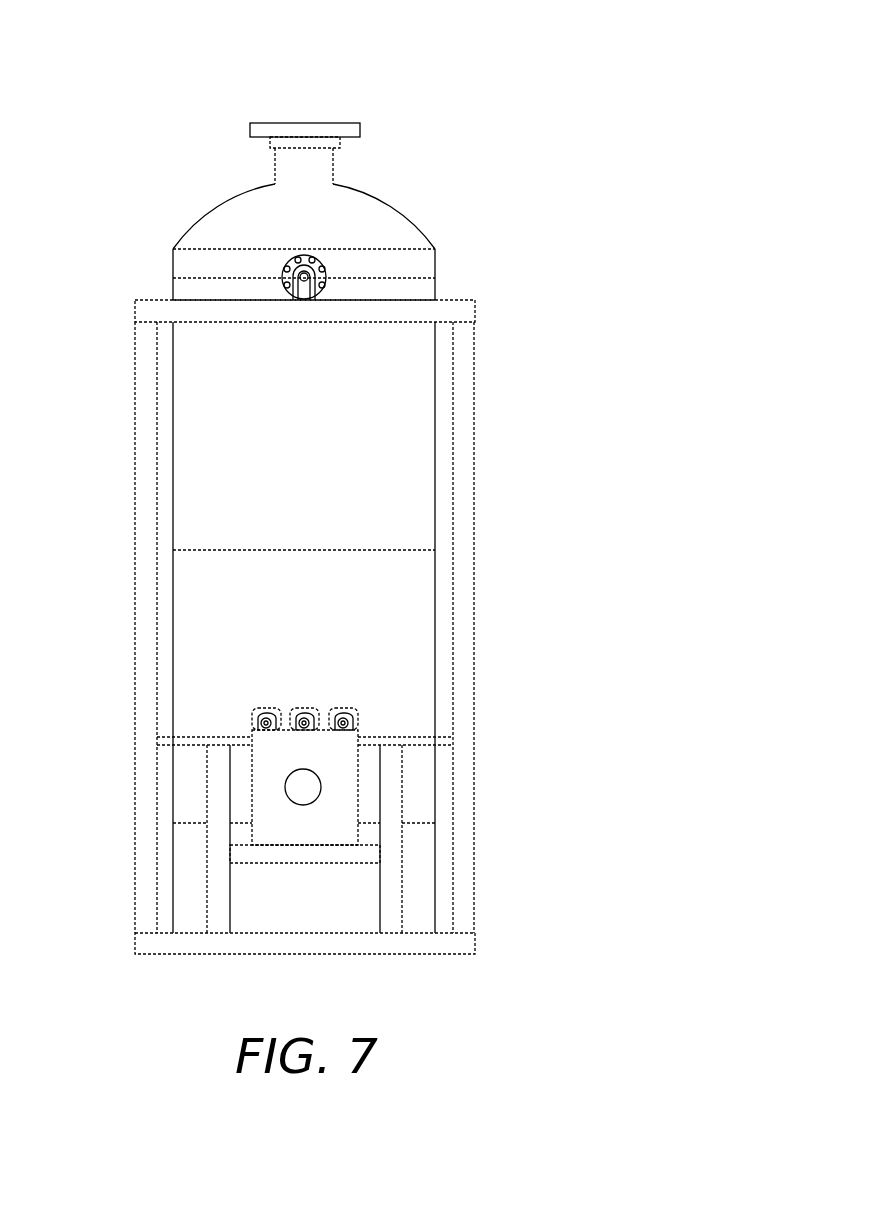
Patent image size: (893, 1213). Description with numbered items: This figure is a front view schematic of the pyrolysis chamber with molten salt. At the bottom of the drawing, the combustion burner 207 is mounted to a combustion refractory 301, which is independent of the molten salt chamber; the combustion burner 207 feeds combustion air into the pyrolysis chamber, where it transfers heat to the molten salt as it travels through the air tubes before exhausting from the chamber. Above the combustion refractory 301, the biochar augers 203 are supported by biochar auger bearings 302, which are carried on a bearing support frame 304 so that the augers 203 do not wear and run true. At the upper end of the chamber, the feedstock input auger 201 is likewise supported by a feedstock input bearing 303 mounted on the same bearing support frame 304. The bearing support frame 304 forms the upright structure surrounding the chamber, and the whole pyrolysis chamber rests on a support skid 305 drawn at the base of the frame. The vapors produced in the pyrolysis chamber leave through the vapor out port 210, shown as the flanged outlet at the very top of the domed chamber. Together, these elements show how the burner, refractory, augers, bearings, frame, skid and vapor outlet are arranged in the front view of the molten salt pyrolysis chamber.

The vapor out port 210 is at (304, 122).
The feedstock input auger 201 is at (306, 274).
The feedstock input bearing 303 is at (296, 296).
The bearing support frame 304 is at (460, 310).
The biochar auger bearings 302 is at (302, 702).
The biochar augers 203 is at (266, 728).
The combustion refractory 301 is at (276, 818).
The combustion burner 207 is at (303, 798).
The support skid 305 is at (435, 947).